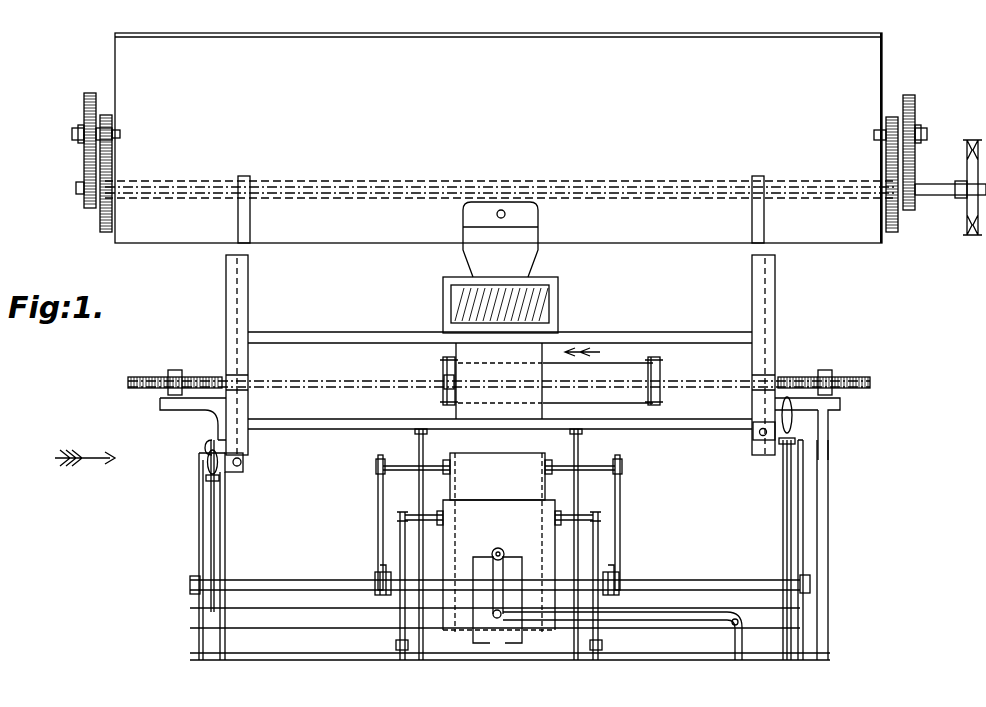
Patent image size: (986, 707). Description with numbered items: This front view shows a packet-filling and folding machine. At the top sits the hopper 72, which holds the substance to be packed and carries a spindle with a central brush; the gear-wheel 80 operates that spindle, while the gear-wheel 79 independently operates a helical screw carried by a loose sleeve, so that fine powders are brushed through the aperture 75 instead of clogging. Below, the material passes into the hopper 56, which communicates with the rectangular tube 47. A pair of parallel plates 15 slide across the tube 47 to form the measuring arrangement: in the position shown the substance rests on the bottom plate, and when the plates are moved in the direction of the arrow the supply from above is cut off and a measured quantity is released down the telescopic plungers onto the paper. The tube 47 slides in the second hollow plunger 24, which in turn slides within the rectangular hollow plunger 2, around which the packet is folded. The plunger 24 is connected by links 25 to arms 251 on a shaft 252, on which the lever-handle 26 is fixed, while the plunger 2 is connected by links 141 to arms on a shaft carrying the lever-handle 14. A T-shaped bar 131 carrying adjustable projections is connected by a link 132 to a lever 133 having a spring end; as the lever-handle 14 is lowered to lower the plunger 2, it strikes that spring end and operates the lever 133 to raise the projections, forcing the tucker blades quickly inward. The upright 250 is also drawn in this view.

The hopper 72 is at (498, 138).
The gear-wheel 80 is at (92, 172).
The gear-wheel 79 is at (100, 226).
The aperture 75 is at (512, 262).
The hopper 56 is at (558, 305).
The parallel plates 15 is at (652, 362).
The rectangular tube 47 is at (445, 399).
The second hollow plunger 24 is at (497, 476).
The hollow plunger 2 is at (499, 542).
The upright 250 is at (380, 494).
The links 25 is at (618, 486).
The lever-handle 26 is at (212, 542).
The links 141 is at (400, 546).
The arms 251 is at (372, 582).
The shaft 252 is at (286, 583).
The lever-handle 14 is at (790, 552).
The link 132 is at (500, 560).
The T-shaped bar 131 is at (507, 655).
The lever 133 is at (655, 622).